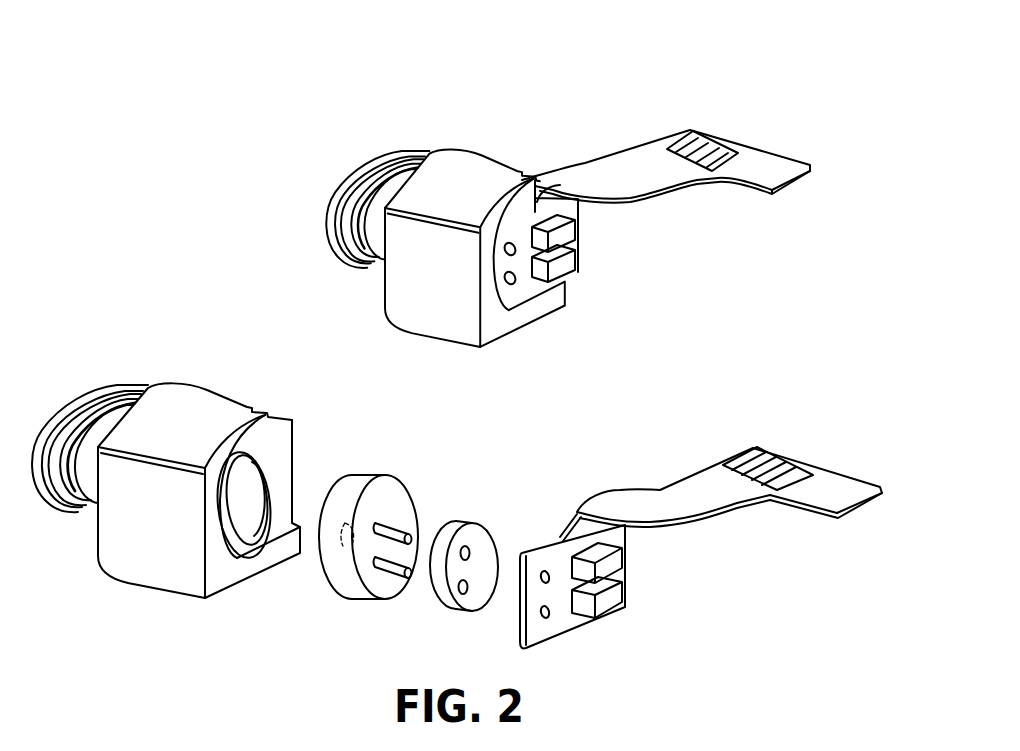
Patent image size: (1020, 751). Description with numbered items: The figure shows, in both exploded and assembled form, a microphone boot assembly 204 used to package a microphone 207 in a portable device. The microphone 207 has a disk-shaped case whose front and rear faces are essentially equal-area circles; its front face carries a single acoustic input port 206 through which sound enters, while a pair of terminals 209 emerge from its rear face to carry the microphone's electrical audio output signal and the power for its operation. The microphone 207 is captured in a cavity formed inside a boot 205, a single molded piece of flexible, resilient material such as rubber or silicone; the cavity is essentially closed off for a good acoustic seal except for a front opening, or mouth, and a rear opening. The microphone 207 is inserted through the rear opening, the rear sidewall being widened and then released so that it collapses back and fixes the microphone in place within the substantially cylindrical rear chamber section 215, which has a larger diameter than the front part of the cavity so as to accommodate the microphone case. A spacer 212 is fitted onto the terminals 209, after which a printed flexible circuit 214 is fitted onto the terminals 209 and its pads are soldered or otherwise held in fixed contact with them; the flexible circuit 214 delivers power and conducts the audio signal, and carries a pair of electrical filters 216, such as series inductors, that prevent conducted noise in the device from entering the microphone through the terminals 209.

The microphone boot assembly 204 is at (481, 135).
The boot 205 is at (410, 333).
The acoustic input port 206 is at (338, 497).
The microphone 207 is at (372, 483).
The terminals 209 is at (513, 252).
The spacer 212 is at (463, 523).
The printed flexible circuit 214 is at (752, 158).
The rear chamber section 215 is at (231, 512).
The electrical filters 216 is at (578, 226).